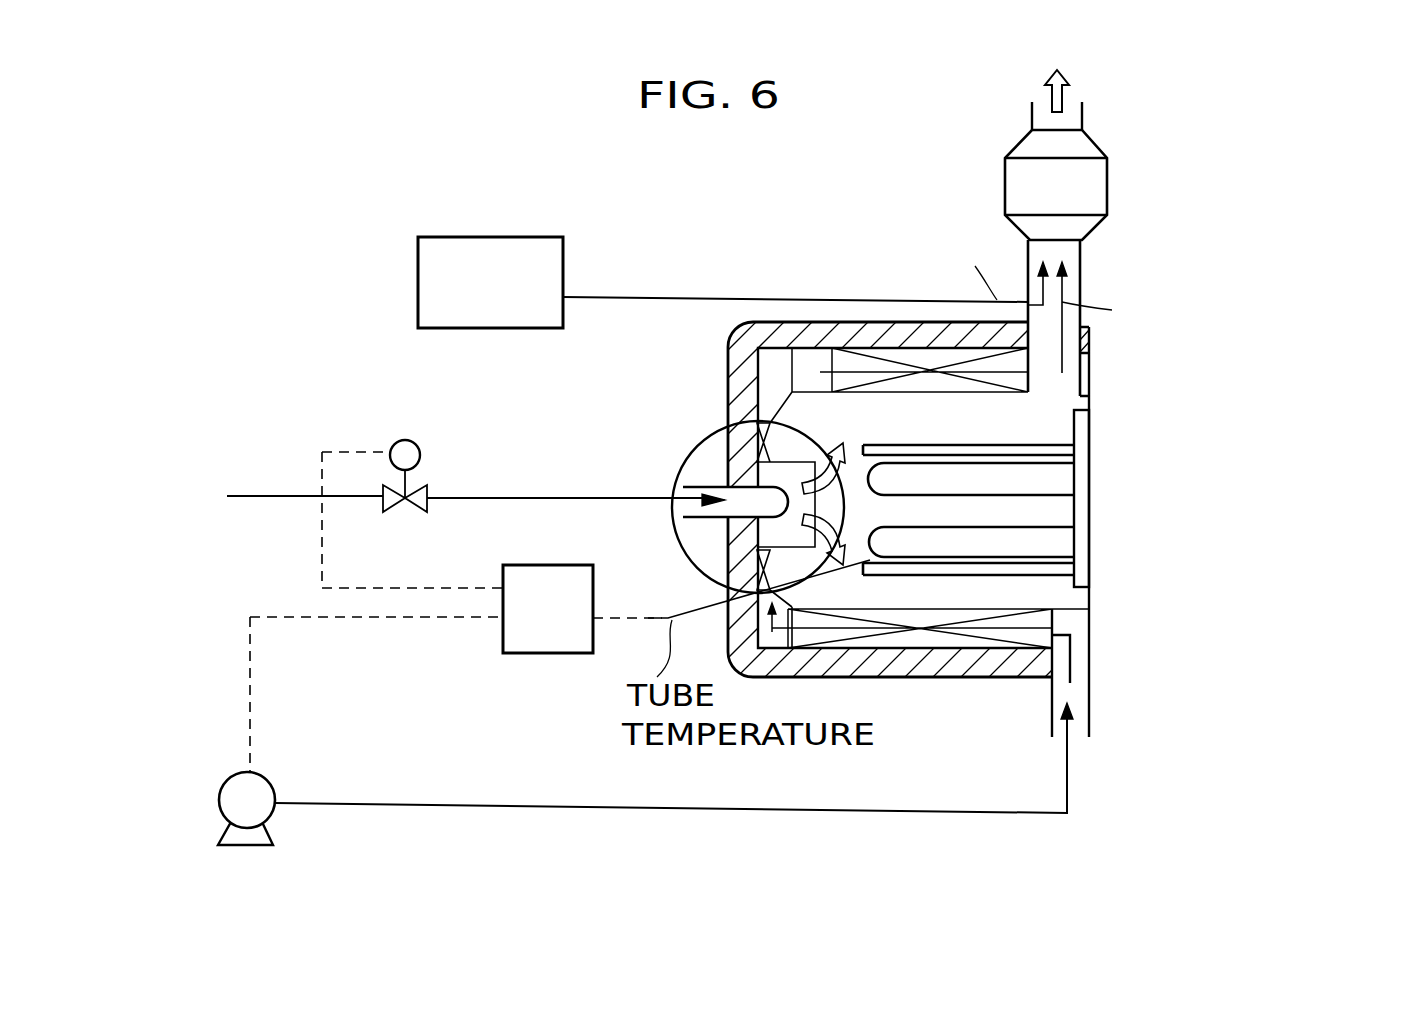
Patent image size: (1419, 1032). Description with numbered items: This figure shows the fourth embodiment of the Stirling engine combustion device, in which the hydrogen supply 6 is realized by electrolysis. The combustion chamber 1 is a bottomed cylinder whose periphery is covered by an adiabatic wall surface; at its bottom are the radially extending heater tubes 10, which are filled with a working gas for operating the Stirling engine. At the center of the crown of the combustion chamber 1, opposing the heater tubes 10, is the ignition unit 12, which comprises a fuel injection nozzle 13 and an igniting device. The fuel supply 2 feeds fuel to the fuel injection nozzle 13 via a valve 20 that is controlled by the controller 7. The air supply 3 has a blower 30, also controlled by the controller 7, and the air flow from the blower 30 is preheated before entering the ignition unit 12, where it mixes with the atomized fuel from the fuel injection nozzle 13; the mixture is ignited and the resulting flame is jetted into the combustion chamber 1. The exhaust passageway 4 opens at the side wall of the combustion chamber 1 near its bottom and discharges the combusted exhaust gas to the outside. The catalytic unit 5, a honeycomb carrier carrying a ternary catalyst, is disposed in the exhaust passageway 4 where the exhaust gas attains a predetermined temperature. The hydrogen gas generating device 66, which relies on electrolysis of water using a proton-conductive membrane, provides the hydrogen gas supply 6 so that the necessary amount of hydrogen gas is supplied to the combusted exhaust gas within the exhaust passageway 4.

The combustion chamber 1 is at (952, 703).
The fuel supply 2 is at (270, 498).
The air supply 3 is at (466, 805).
The exhaust passageway 4 is at (1070, 254).
The catalytic unit 5 is at (1130, 186).
The hydrogen gas supply 6 is at (647, 297).
The controller 7 is at (547, 583).
The heater tubes 10 is at (1055, 543).
The ignition unit 12 is at (678, 579).
The fuel injection nozzle 13 is at (692, 492).
The valve 20 is at (421, 455).
The blower 30 is at (240, 832).
The hydrogen gas generating device 66 is at (475, 248).